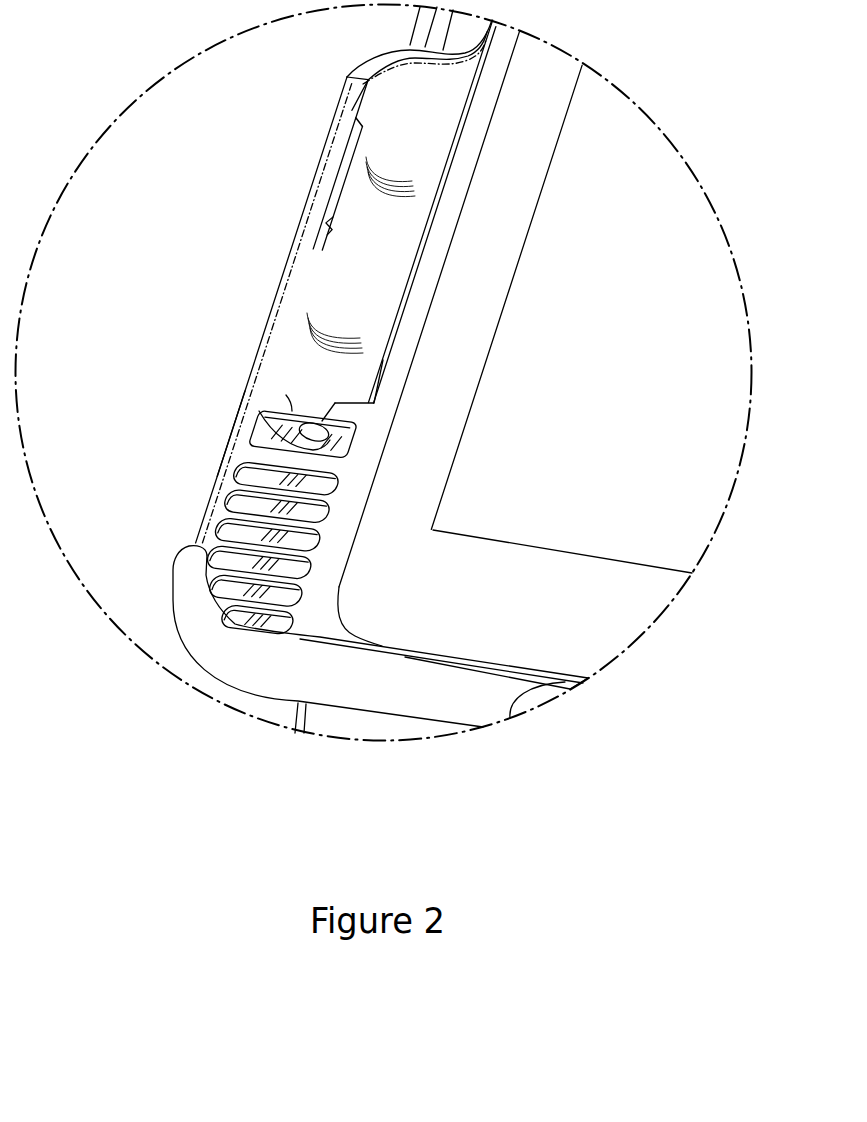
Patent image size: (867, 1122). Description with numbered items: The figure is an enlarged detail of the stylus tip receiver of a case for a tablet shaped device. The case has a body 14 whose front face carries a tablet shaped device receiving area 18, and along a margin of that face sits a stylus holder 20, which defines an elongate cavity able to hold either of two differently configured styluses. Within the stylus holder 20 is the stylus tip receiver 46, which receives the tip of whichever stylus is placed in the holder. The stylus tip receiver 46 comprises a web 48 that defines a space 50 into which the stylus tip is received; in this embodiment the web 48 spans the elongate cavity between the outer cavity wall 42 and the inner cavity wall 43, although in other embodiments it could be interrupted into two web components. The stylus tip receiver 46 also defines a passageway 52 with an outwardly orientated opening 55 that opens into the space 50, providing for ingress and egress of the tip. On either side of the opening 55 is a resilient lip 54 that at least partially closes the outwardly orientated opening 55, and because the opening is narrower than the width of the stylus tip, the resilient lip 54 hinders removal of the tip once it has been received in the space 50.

The body 14 is at (400, 693).
The tablet shaped device receiving area 18 is at (633, 349).
The stylus holder 20 is at (323, 297).
The outer cavity wall 42 is at (250, 400).
The inner cavity wall 43 is at (376, 423).
The stylus tip receiver 46 is at (238, 434).
The web 48 is at (262, 414).
The space 50 is at (318, 442).
The passageway 52 is at (307, 413).
The resilient lip 54 is at (282, 389).
The outwardly orientated opening 55 is at (326, 388).